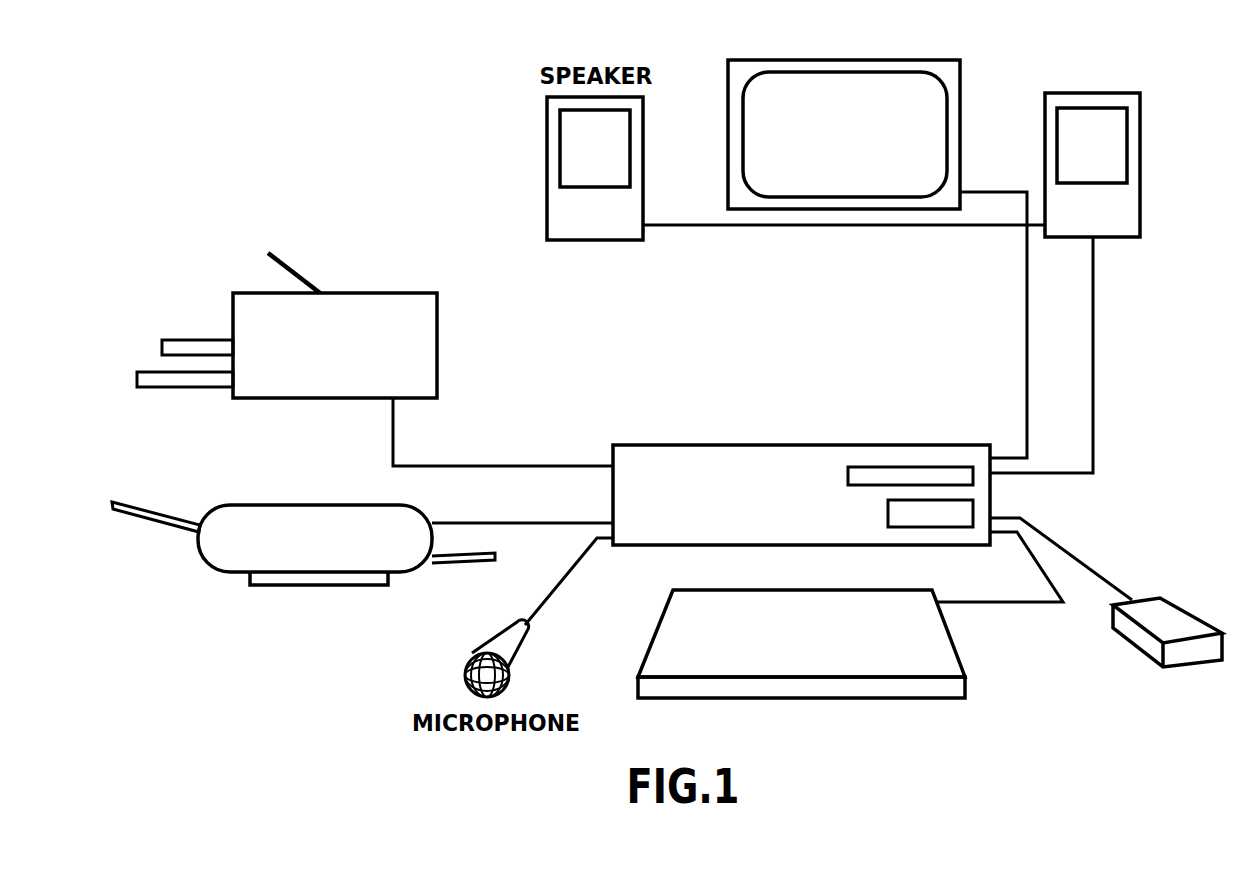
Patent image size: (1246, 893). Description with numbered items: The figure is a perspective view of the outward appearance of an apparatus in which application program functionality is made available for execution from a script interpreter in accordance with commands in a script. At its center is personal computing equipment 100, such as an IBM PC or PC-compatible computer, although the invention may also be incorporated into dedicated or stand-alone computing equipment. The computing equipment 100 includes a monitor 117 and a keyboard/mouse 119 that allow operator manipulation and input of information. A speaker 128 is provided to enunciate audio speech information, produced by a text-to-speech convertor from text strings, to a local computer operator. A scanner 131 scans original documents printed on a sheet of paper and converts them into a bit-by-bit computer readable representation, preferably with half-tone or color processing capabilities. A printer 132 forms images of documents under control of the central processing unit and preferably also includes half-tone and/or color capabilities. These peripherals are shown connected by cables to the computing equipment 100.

The personal computing equipment 100 is at (703, 445).
The monitor 117 is at (847, 59).
The speaker 128 is at (1080, 93).
The scanner 131 is at (290, 505).
The printer 132 is at (345, 293).
The keyboard/mouse 119 is at (1137, 648).